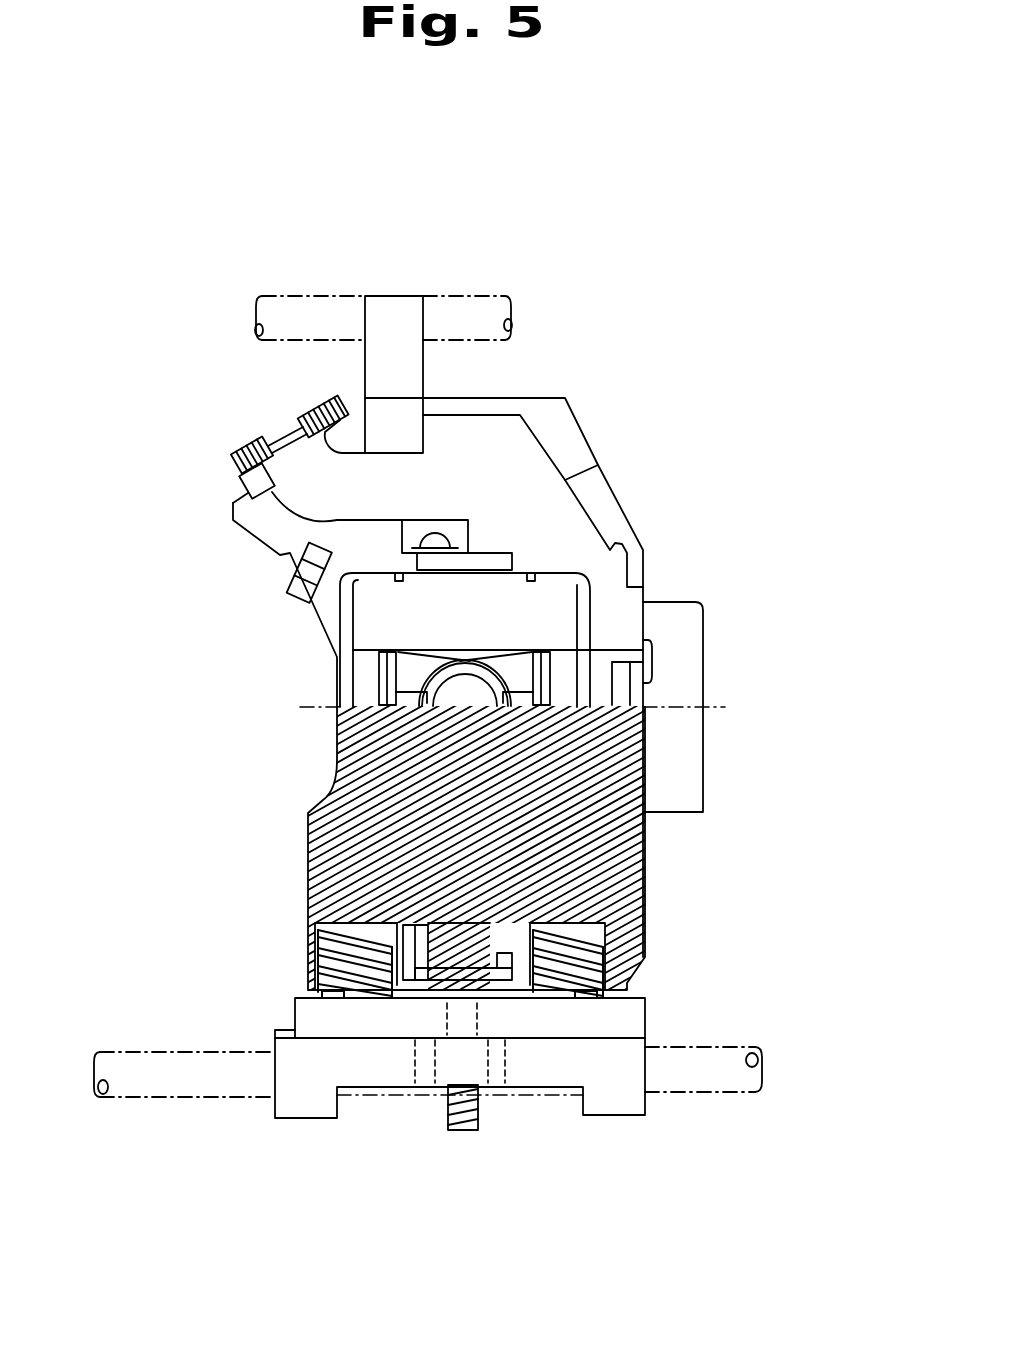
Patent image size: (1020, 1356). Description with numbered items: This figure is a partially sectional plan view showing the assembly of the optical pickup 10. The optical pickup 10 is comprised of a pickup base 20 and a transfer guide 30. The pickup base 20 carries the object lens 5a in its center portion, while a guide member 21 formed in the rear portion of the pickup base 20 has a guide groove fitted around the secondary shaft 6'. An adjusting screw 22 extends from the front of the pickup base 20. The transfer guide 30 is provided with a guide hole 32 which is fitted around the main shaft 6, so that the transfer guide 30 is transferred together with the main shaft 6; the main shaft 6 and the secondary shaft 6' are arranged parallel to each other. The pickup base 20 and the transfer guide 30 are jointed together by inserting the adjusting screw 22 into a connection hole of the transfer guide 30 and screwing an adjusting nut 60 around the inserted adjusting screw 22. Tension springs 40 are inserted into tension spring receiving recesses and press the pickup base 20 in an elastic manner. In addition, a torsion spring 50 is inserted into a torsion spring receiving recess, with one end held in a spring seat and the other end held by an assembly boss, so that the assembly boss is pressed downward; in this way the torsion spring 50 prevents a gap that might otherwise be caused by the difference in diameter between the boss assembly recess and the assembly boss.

The optical pickup 10 is at (205, 420).
The guide member 21 is at (390, 310).
The secondary shaft 6' is at (383, 239).
The object lens 5a is at (473, 656).
The pickup base 20 is at (627, 620).
The tension spring 40 is at (607, 940).
The guide hole 32 is at (310, 940).
The torsion spring 50 is at (472, 970).
The transfer guide 30 is at (645, 1003).
The adjusting nut 60 is at (493, 1090).
The adjusting screw 22 is at (457, 1130).
The main shaft 6 is at (428, 1155).